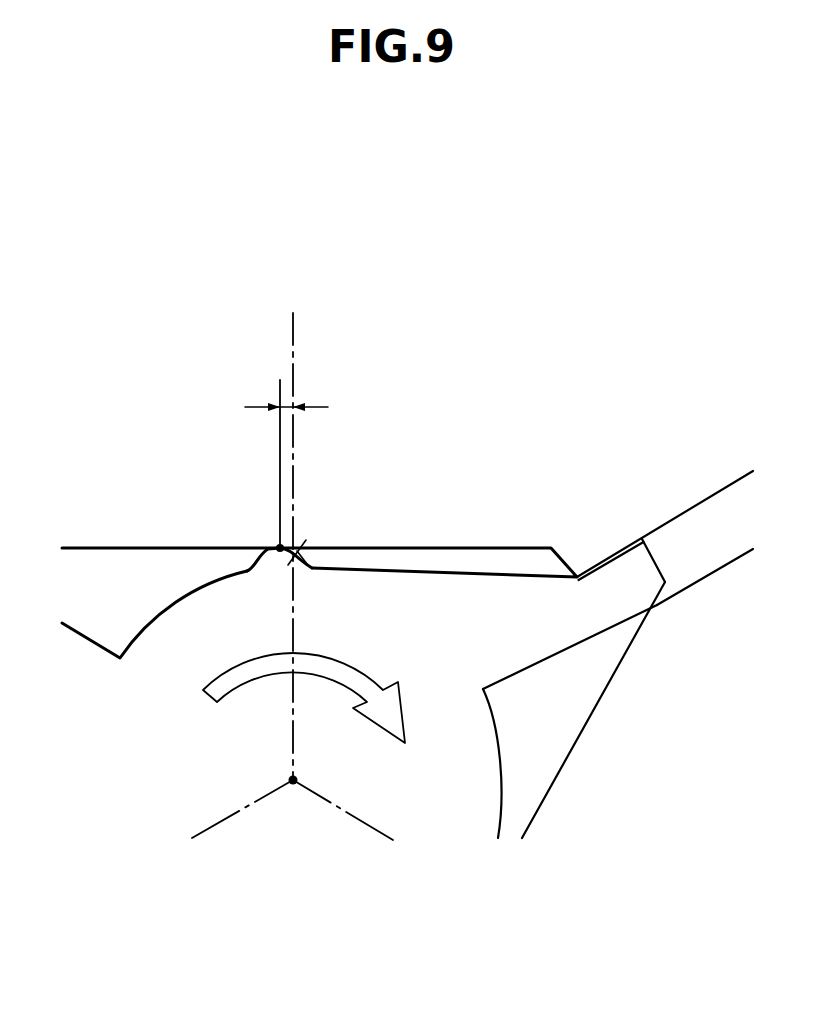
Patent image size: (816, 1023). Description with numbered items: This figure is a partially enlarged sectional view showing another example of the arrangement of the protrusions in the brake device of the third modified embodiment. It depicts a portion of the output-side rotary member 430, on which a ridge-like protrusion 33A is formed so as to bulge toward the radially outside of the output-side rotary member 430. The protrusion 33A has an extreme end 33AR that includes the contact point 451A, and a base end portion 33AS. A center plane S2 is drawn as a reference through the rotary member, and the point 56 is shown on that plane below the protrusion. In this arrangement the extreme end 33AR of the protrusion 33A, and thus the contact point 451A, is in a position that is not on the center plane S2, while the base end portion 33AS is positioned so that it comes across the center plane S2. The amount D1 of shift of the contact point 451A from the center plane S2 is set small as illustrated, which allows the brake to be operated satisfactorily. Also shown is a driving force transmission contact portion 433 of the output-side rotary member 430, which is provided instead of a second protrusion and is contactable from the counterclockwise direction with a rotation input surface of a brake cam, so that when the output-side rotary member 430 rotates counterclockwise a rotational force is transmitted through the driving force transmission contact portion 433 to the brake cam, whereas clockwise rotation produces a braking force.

The output-side rotary member 430 is at (160, 615).
The contact point 451A is at (279, 548).
The protrusion 33A is at (425, 452).
The extreme end of the protrusion 33AR is at (293, 549).
The base end portion 33AS is at (309, 546).
The driving force transmission contact portion 433 is at (615, 592).
The rotation center axis 56 is at (293, 784).
The center plane S2 is at (294, 528).
The amount of shift D1 is at (280, 460).